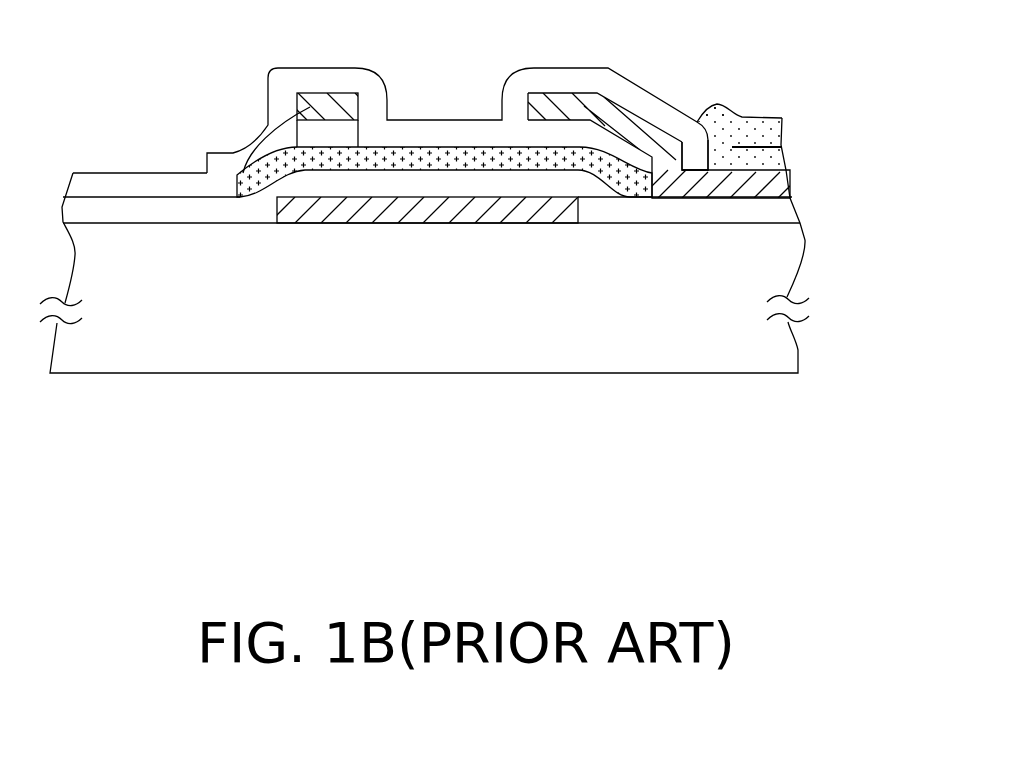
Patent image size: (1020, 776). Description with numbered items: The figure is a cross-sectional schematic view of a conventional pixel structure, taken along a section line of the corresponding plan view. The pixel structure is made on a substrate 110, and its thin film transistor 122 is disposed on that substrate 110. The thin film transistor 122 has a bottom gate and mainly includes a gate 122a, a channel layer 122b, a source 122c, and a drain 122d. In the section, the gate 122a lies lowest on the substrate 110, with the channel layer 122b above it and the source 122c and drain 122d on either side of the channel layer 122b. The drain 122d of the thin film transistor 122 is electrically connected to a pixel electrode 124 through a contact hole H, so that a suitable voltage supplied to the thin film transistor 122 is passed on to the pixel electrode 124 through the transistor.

The substrate 110 is at (773, 348).
The thin film transistor 122 is at (673, 455).
The gate 122a is at (343, 212).
The channel layer 122b is at (455, 155).
The source 122c is at (242, 190).
The drain 122d is at (678, 185).
The pixel electrode 124 is at (758, 128).
The contact hole H is at (715, 153).